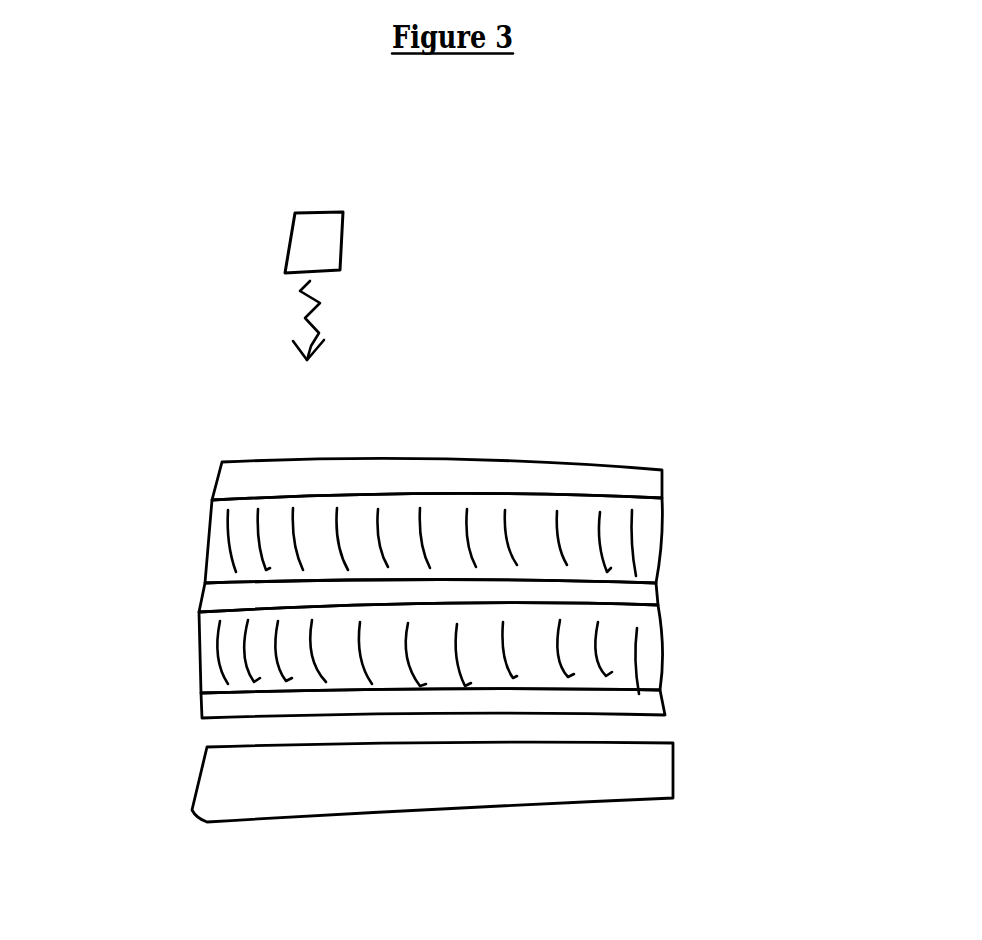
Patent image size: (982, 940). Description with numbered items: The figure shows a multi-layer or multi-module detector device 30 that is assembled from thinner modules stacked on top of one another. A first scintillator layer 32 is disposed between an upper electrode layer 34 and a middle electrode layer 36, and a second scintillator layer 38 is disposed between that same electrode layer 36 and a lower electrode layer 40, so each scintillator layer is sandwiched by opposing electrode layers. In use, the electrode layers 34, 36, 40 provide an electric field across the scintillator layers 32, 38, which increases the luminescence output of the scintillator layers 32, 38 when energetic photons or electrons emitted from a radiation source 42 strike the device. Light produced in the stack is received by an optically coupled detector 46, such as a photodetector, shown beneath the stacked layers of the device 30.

The device 30 is at (840, 917).
The first scintillator layer 32 is at (203, 535).
The electrode layer 34 is at (662, 478).
The electrode layer 36 is at (658, 590).
The scintillator layer 38 is at (200, 655).
The electrode layer 40 is at (665, 705).
The radiation source 42 is at (350, 236).
The optically coupled detector 46 is at (190, 808).